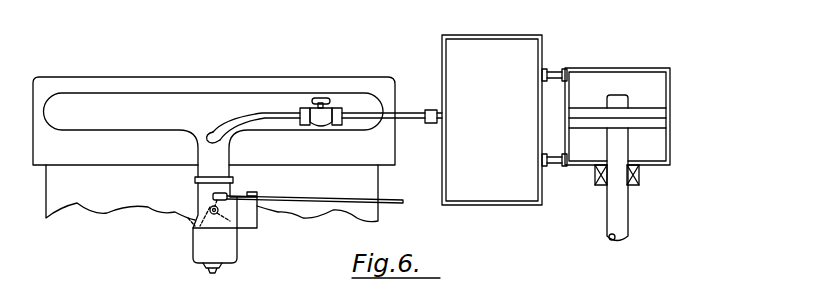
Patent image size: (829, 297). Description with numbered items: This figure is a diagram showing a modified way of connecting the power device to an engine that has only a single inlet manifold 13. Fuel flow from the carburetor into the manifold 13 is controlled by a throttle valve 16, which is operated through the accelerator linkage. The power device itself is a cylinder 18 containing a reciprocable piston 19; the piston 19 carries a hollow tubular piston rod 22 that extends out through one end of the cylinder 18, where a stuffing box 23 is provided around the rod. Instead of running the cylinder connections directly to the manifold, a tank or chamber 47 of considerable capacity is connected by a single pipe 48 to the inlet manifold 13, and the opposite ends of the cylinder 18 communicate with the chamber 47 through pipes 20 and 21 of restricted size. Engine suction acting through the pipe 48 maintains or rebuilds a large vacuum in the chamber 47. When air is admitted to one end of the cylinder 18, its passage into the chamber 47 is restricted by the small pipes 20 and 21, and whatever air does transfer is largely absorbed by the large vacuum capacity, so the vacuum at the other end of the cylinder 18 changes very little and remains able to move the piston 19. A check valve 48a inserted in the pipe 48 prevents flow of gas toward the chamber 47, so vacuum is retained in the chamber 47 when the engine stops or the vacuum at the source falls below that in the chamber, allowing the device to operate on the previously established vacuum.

The inlet manifold 13 is at (144, 108).
The throttle valve 16 is at (195, 225).
The cylinder 18 is at (670, 83).
The piston 19 is at (657, 122).
The pipe 20 is at (553, 72).
The pipe 21 is at (556, 167).
The piston rod 22 is at (612, 207).
The stuffing box 23 is at (639, 180).
The chamber 47 is at (542, 47).
The pipe 48 is at (412, 113).
The check valve 48a is at (320, 98).